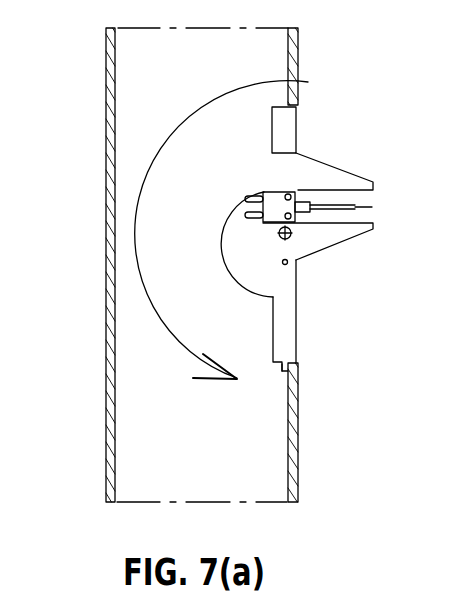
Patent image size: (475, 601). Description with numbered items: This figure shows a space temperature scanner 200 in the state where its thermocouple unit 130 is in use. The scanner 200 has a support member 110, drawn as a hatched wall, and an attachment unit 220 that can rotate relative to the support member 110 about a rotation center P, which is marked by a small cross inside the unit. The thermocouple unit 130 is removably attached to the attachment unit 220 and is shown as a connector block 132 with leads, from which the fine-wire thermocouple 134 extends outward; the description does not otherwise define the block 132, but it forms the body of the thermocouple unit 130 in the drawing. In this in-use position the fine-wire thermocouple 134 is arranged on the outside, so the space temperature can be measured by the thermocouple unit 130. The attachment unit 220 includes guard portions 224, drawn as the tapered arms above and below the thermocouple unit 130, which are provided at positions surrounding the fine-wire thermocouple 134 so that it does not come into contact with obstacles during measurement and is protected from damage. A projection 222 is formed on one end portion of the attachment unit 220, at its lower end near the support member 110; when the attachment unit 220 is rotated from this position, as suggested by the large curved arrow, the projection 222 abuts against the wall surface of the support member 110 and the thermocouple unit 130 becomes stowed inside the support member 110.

The support member 110 is at (113, 79).
The thermocouple unit 130 is at (317, 171).
The light source board 132 is at (278, 196).
The fine-wire thermocouple 134 is at (366, 207).
The space temperature scanner 200 is at (151, 265).
The attachment unit 220 is at (214, 269).
The projection 222 is at (283, 372).
The guard portion 224 is at (345, 171).
The rotation center P is at (306, 272).